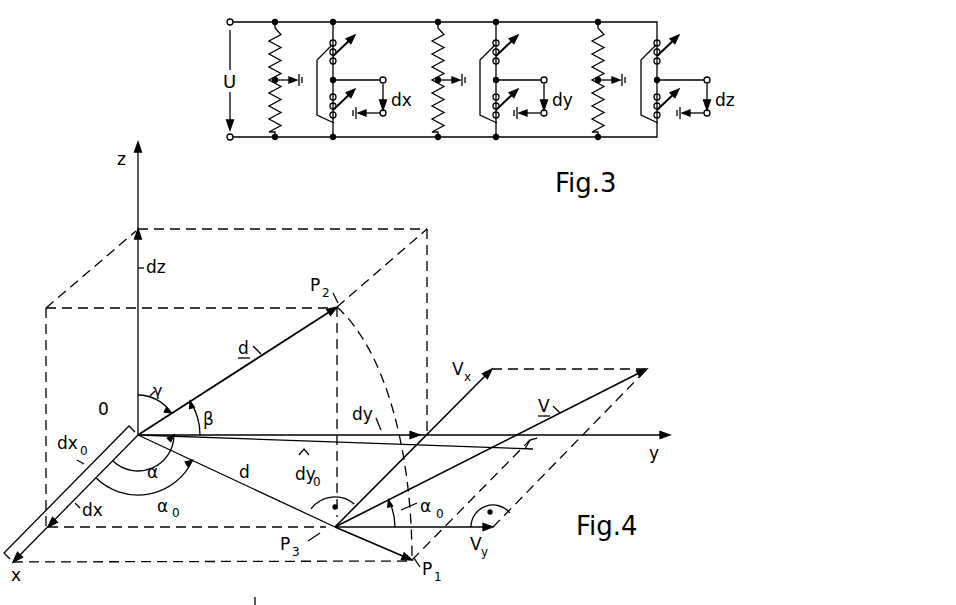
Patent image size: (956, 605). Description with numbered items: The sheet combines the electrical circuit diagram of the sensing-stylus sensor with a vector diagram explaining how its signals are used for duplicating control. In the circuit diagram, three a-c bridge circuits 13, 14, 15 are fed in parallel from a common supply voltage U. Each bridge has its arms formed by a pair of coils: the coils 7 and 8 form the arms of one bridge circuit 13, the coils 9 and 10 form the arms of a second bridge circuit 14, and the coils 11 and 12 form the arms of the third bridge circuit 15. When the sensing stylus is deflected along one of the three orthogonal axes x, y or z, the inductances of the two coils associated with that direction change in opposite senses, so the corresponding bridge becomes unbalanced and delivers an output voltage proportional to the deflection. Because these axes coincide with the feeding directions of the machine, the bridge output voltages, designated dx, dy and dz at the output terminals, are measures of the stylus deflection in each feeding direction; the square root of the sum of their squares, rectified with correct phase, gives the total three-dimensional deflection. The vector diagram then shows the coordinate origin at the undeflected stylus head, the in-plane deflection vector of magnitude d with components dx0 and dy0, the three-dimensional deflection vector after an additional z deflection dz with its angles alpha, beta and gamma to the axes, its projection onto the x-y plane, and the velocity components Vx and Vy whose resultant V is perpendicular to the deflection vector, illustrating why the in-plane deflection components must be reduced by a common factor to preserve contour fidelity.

The coil 7 is at (661, 56).
The coil 8 is at (659, 115).
The coil 9 is at (337, 58).
The coil 10 is at (335, 115).
The coil 11 is at (500, 56).
The coil 12 is at (498, 115).
The a-c bridge circuit 13 is at (307, 117).
The a-c bridge circuit 14 is at (470, 117).
The a-c bridge circuit 15 is at (630, 117).